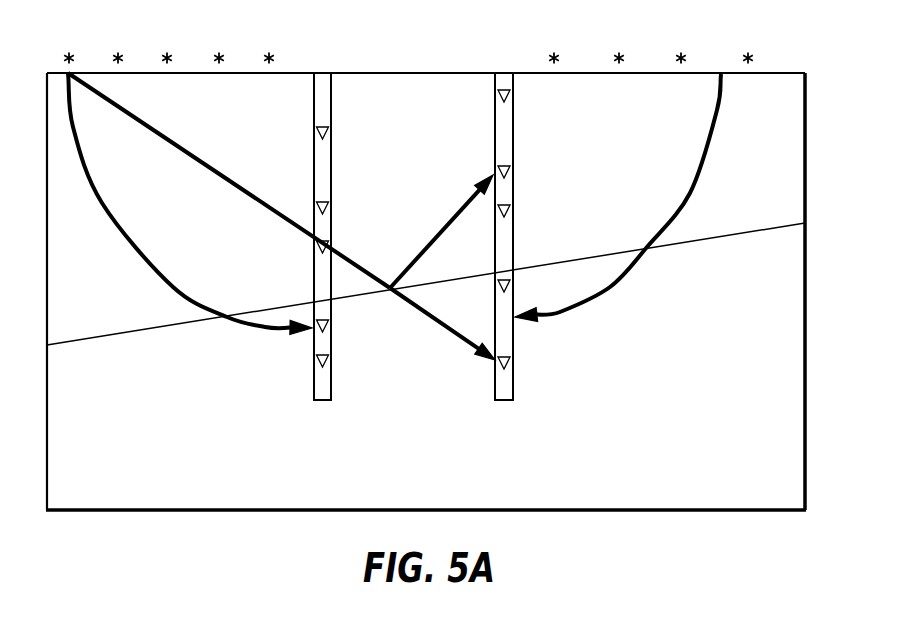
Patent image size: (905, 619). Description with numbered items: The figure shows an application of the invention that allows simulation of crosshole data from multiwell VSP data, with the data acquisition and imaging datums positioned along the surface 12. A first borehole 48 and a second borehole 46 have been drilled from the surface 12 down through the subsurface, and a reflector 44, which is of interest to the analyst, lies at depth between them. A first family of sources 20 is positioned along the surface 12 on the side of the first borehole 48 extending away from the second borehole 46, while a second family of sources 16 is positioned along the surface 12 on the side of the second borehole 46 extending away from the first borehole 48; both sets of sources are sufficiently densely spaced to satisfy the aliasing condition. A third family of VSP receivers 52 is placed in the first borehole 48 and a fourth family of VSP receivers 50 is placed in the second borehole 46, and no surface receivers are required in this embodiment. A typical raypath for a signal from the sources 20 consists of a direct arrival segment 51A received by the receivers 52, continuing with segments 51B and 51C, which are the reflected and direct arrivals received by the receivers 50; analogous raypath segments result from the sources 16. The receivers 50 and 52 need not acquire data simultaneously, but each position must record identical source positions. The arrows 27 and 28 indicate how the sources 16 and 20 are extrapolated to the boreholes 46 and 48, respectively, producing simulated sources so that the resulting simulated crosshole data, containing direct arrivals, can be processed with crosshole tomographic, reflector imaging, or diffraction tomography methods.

The surface 12 is at (805, 73).
The second family of sources 16 is at (554, 52).
The first family of sources 20 is at (69, 52).
The arrow 27 is at (614, 278).
The arrow 28 is at (142, 260).
The reflector 44 is at (714, 236).
The second borehole 46 is at (495, 402).
The first borehole 48 is at (314, 402).
The fourth family of receivers 50 is at (514, 95).
The third family of receivers 52 is at (313, 131).
The direct arrival segment 51A is at (198, 160).
The raypath segment 51B is at (447, 221).
The raypath segment 51C is at (452, 330).